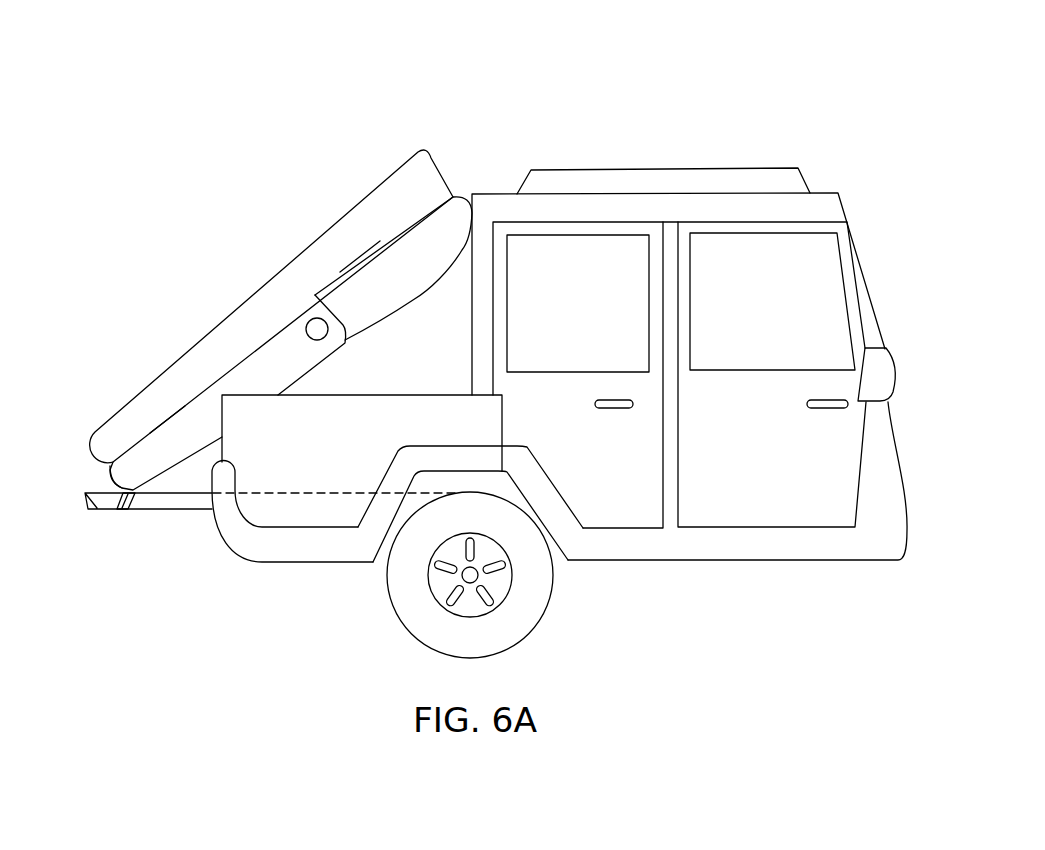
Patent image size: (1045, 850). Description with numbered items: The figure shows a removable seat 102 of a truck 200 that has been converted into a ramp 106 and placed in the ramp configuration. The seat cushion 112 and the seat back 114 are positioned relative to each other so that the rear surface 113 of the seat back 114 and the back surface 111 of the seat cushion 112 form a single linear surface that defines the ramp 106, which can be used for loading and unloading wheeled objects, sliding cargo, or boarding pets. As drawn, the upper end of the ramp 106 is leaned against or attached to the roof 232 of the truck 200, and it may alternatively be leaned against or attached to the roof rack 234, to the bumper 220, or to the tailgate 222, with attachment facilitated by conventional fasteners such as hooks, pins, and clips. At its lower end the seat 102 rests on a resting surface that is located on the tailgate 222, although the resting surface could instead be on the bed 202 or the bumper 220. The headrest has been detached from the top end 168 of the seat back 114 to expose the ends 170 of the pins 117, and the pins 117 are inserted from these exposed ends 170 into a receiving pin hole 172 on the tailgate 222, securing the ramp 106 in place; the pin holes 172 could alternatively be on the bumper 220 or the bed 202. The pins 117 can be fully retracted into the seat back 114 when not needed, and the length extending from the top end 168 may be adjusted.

The truck 200 is at (612, 100).
The bed 202 is at (345, 490).
The bumper 220 is at (311, 556).
The tailgate 222 is at (88, 493).
The roof 232 is at (483, 193).
The roof rack 234 is at (525, 186).
The seat 102 is at (387, 347).
The ramp 106 is at (266, 284).
The back surface 111 is at (358, 258).
The seat cushion 112 is at (406, 283).
The rear surface 113 is at (167, 408).
The seat back 114 is at (216, 430).
The pins 117 is at (140, 522).
The top end 168 is at (110, 475).
The ends 170 is at (130, 502).
The receiving pin hole 172 is at (120, 507).